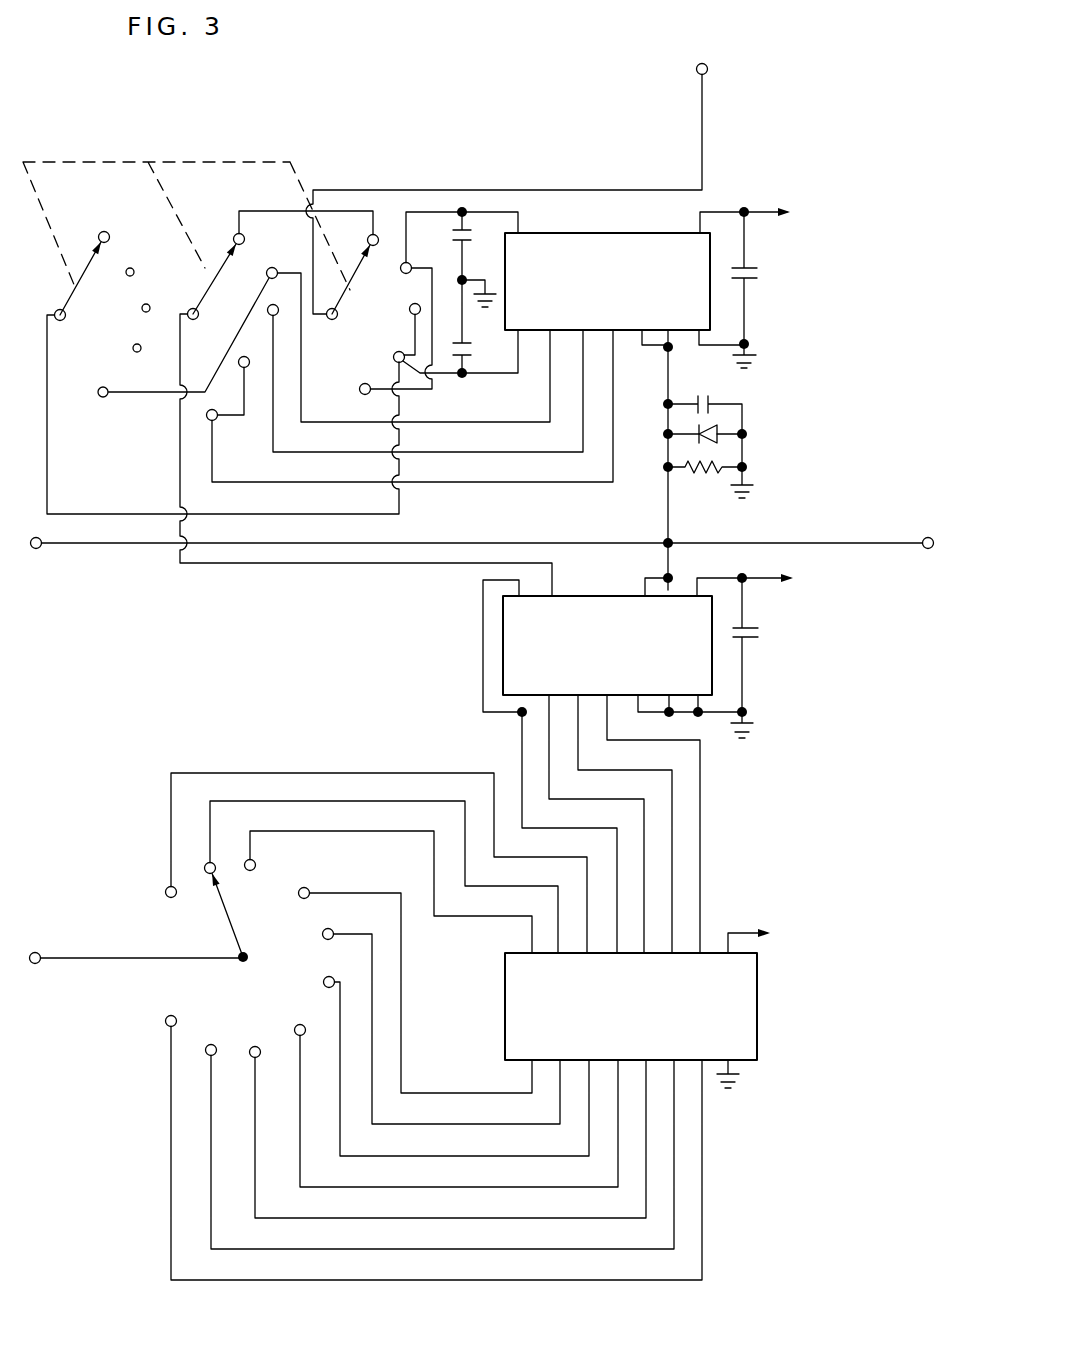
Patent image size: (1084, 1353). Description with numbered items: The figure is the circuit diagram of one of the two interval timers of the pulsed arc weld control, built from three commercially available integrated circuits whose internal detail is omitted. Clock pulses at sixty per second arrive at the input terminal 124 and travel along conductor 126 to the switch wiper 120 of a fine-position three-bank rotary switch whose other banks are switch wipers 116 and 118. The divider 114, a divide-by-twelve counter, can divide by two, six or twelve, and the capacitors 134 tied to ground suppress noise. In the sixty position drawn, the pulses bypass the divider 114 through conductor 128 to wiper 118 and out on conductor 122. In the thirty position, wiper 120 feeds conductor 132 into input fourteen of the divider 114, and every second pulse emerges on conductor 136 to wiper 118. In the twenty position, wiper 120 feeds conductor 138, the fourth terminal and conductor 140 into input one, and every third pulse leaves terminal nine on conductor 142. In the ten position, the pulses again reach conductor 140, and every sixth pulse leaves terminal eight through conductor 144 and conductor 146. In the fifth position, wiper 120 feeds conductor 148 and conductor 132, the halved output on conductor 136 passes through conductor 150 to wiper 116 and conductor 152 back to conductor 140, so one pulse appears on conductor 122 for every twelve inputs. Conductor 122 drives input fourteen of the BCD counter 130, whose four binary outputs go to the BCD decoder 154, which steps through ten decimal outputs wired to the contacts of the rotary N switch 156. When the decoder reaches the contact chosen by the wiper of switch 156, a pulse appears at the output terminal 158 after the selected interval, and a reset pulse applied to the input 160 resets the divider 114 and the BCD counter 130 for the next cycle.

The divider 114 is at (575, 240).
The switch wiper 116 is at (80, 267).
The switch wiper 118 is at (215, 263).
The switch wiper 120 is at (347, 270).
The conductor 122 is at (183, 530).
The input terminal 124 is at (708, 69).
The conductor 126 is at (438, 189).
The conductor 128 is at (287, 170).
The BCD counter 130 is at (513, 625).
The conductor 132 is at (505, 211).
The capacitors 134 is at (453, 232).
The conductor 136 is at (444, 422).
The conductor 138 is at (410, 336).
The conductor 140 is at (488, 380).
The conductor 142 is at (585, 378).
The conductor 144 is at (433, 486).
The conductor 146 is at (232, 415).
The conductor 148 is at (404, 309).
The conductor 150 is at (218, 358).
The conductor 152 is at (98, 513).
The BCD decoder 154 is at (735, 1017).
The rotary N switch 156 is at (227, 920).
The output terminal 158 is at (35, 964).
The input 160 is at (36, 548).